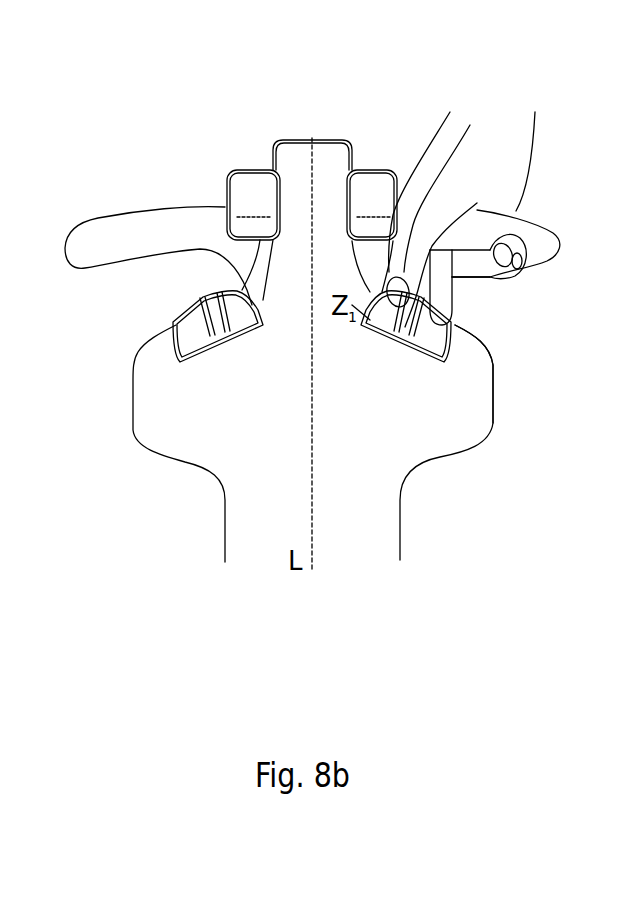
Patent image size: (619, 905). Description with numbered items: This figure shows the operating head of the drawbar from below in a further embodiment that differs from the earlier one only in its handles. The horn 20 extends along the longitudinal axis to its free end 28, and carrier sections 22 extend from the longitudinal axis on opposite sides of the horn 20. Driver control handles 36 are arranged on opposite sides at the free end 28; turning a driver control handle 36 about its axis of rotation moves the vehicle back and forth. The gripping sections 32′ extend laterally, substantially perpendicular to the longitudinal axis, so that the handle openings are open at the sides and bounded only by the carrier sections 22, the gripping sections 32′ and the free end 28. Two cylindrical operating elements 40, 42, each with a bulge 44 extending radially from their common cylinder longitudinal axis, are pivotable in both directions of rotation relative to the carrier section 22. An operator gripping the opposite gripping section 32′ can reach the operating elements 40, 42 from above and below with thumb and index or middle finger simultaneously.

The horn 20 is at (353, 470).
The carrier section 22 is at (442, 430).
The free end 28 is at (318, 165).
The driver control handle 36 is at (245, 187).
The gripping section 32′ is at (117, 232).
The operating element 42 is at (188, 324).
The operating element 40 is at (224, 306).
The bulge 44 is at (437, 308).